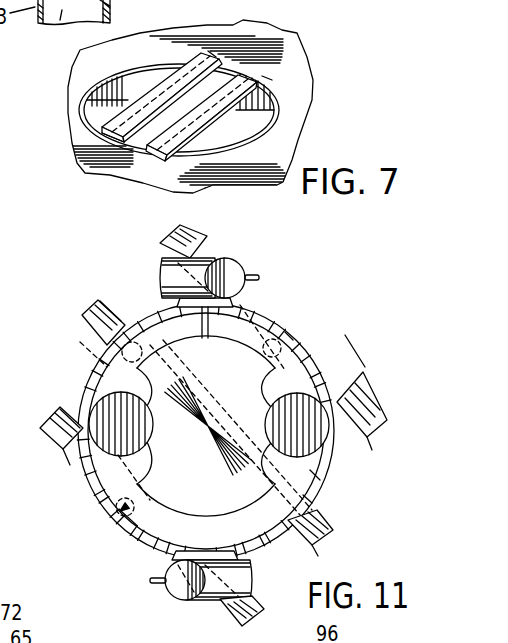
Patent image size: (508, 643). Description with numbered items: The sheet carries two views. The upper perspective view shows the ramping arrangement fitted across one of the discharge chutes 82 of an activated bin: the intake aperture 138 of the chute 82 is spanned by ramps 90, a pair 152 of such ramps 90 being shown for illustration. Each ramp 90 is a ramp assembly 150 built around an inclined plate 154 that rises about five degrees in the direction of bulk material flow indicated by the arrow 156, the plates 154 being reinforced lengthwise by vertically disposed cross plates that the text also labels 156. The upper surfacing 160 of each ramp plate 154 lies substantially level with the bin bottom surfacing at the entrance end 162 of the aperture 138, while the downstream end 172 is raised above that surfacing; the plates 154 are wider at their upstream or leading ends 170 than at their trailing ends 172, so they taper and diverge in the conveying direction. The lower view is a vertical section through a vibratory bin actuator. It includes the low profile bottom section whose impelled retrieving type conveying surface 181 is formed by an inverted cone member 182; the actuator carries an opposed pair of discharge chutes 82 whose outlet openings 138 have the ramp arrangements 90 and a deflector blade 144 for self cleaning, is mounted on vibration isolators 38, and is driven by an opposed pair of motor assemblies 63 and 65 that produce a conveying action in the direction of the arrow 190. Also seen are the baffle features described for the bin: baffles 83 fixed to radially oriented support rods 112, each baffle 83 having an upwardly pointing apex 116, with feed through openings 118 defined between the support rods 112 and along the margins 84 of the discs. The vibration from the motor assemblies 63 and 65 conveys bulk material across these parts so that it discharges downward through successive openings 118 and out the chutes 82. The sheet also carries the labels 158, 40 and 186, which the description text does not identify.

In FIG. 7, the discharge chute 82 is at (65, 16).
In FIG. 11, the discharge chute 82 is at (100, 378).
In FIG. 7, the ramp 90 is at (122, 85).
In FIG. 11, the ramp 90 is at (83, 409).
In FIG. 7, the intake aperture 138 is at (95, 100).
In FIG. 11, the intake aperture 138 is at (262, 405).
In FIG. 7, the ramp assembly 150 is at (294, 80).
In FIG. 7, the pair of ramps 152 is at (239, 46).
In FIG. 7, the inclined plate 154 is at (176, 72).
In FIG. 7, the flow direction arrow 156 is at (302, 36).
In FIG. 7, the side wall section 158 is at (280, 115).
In FIG. 7, the upper surfacing 160 is at (105, 120).
In FIG. 7, the entrance end 162 is at (118, 146).
In FIG. 7, the upstream end 170 is at (100, 143).
In FIG. 7, the downstream end 172 is at (213, 44).
In FIG. 11, the motor assembly 63 is at (218, 258).
In FIG. 11, the motor assembly 65 is at (207, 603).
In FIG. 11, the support rod 112 is at (180, 302).
In FIG. 11, the feed through opening 118 is at (156, 326).
In FIG. 11, the conveying surface 181 is at (288, 329).
In FIG. 11, the vibration isolator 38 is at (103, 344).
In FIG. 11, the conveying direction arrow 190 is at (365, 340).
In FIG. 11, the deflector blade 144 is at (45, 424).
In FIG. 11, the blade holder 40 is at (72, 443).
In FIG. 11, the apex 116 is at (207, 430).
In FIG. 11, the margin 84 is at (222, 519).
In FIG. 11, the ring edge 186 is at (318, 478).
In FIG. 11, the inverted cone member 182 is at (310, 500).
In FIG. 11, the baffle 83 is at (133, 530).